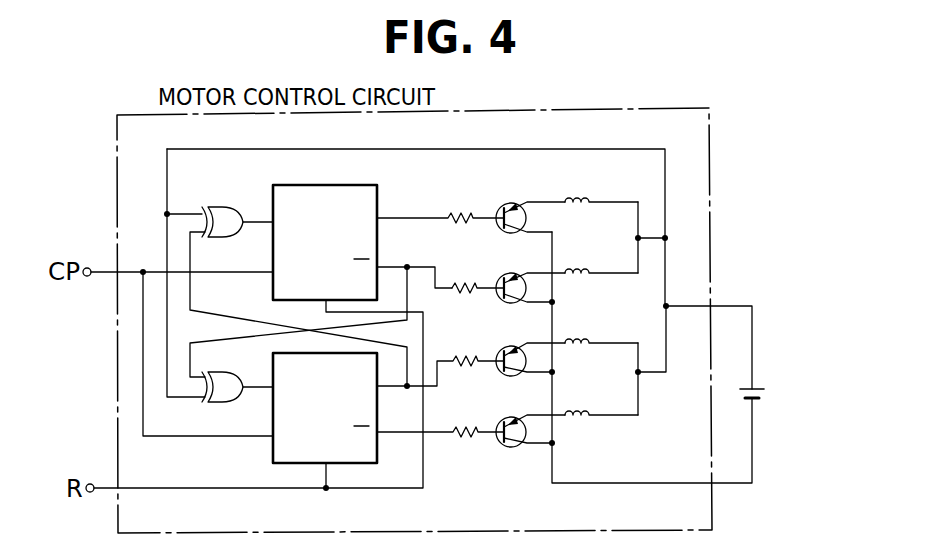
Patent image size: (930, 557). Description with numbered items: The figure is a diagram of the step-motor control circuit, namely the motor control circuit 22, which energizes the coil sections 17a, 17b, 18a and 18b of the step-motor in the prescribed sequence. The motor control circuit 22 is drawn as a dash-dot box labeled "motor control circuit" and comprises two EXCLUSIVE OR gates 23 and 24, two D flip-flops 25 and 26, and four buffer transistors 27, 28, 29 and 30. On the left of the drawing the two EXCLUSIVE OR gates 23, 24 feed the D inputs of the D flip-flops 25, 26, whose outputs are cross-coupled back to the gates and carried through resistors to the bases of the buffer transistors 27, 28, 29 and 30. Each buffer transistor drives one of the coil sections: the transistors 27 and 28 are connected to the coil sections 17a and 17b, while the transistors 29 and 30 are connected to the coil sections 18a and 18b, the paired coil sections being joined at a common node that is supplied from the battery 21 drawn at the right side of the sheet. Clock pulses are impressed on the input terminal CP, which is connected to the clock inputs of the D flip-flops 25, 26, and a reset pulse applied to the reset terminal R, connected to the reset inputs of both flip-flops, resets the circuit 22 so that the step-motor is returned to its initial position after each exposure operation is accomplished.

The coil section 17a is at (584, 197).
The coil section 17b is at (584, 268).
The coil section 18a is at (589, 338).
The coil section 18b is at (589, 410).
The battery 21 is at (762, 393).
The motor control circuit 22 is at (670, 107).
The EXCLUSIVE OR gate 23 is at (228, 206).
The EXCLUSIVE OR gate 24 is at (225, 404).
The D flip-flop 25 is at (380, 190).
The D flip-flop 26 is at (378, 446).
The buffer transistor 27 is at (511, 203).
The buffer transistor 28 is at (505, 277).
The buffer transistor 29 is at (505, 345).
The buffer transistor 30 is at (505, 417).